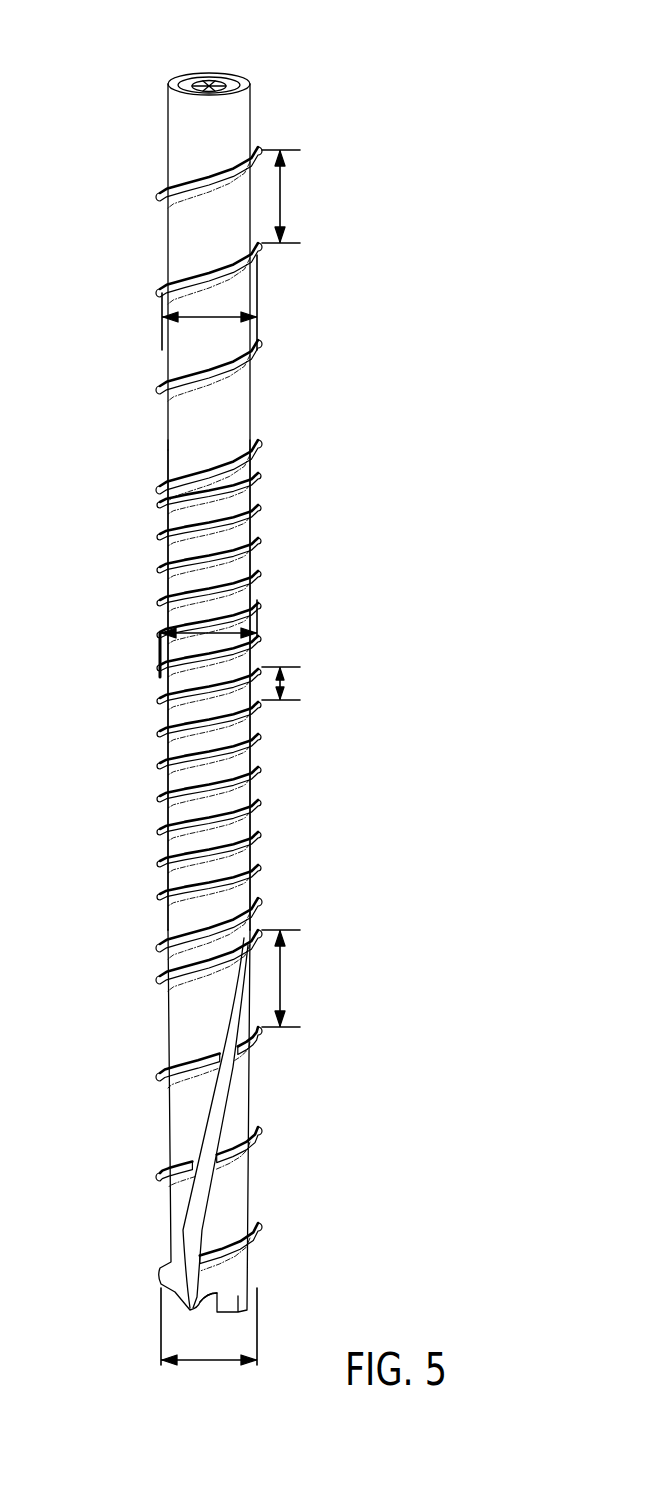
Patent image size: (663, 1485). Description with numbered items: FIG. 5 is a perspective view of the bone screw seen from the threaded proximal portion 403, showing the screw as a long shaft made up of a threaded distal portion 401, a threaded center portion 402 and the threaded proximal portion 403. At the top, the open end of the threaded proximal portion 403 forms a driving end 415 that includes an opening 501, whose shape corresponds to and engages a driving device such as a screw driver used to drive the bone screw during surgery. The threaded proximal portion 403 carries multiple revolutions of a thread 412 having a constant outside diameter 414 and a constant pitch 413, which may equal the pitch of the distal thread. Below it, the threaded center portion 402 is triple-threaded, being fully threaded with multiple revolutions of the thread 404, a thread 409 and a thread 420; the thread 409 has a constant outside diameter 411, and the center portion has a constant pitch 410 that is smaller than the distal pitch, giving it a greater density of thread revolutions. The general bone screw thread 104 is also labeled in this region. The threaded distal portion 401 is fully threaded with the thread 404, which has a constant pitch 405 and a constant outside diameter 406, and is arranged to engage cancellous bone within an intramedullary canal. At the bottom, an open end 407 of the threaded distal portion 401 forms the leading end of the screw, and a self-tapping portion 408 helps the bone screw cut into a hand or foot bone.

The opening 501 is at (205, 80).
The driving end 415 is at (248, 78).
The thread 412 is at (262, 148).
The constant pitch 413 is at (290, 198).
The constant outside diameter 414 is at (200, 315).
The threaded proximal portion 403 is at (376, 289).
The thread 404 is at (160, 494).
The constant outside diameter 411 is at (193, 627).
The bone screw thread 104 is at (260, 540).
The constant pitch 410 is at (288, 682).
The thread 420 is at (260, 767).
The threaded center portion 402 is at (376, 764).
The thread 409 is at (260, 803).
The constant pitch 405 is at (288, 976).
The threaded distal portion 401 is at (376, 1104).
The self-tapping portion 408 is at (188, 1240).
The open end 407 is at (217, 1297).
The constant outside diameter 406 is at (207, 1363).